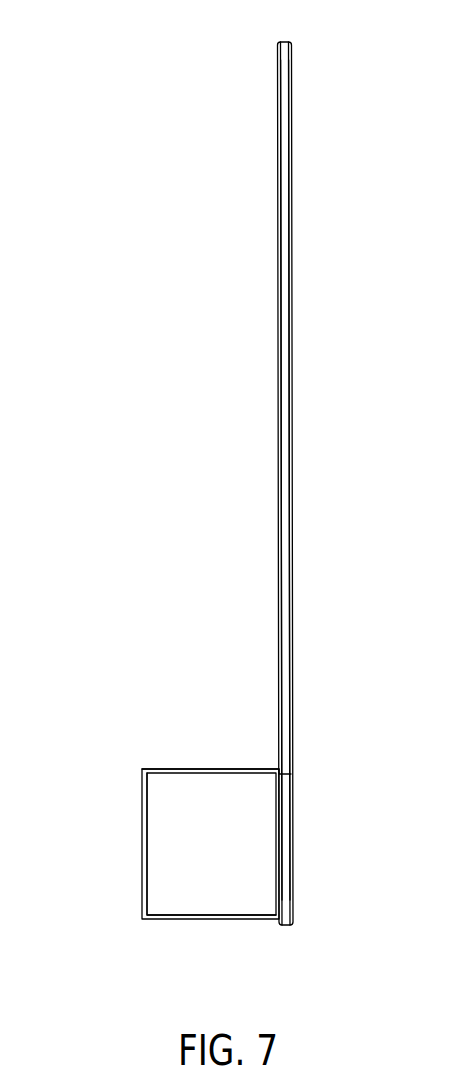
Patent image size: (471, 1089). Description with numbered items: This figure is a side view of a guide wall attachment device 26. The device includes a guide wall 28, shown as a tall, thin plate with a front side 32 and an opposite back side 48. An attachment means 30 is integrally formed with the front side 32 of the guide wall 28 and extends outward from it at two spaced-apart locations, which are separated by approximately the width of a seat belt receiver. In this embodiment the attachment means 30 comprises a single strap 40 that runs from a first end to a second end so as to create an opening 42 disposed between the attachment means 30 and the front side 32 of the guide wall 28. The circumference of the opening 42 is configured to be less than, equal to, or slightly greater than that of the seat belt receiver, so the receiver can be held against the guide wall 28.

The guide wall attachment device 26 is at (68, 168).
The guide wall 28 is at (293, 138).
The back side 48 is at (292, 373).
The front side 32 is at (278, 435).
The opening 42 is at (198, 722).
The attachment means 30 is at (162, 798).
The strap 40 is at (170, 860).